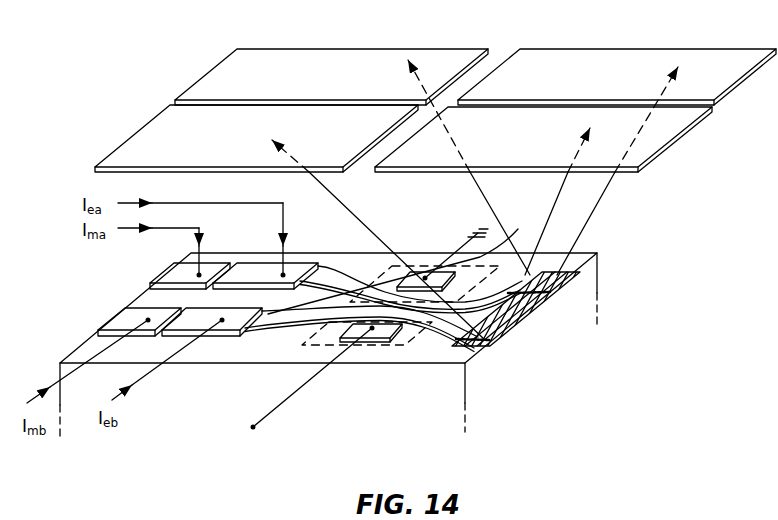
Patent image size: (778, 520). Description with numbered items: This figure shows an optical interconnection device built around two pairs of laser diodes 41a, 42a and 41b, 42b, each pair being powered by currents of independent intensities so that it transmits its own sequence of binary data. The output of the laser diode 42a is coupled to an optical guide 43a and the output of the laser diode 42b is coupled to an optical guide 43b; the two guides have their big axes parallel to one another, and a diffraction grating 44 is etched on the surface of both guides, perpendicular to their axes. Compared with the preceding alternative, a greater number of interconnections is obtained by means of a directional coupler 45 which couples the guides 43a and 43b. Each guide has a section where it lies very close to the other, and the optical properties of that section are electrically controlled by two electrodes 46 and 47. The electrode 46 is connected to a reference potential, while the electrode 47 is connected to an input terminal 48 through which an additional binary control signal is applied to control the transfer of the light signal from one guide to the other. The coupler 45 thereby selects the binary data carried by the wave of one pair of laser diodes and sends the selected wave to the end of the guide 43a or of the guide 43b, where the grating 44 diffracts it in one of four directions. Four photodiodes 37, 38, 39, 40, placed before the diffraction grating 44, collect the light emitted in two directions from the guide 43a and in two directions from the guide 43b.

The photodiode 37 is at (136, 134).
The photodiode 38 is at (291, 49).
The photodiode 39 is at (557, 50).
The photodiode 40 is at (653, 138).
The laser diode 41a is at (167, 270).
The laser diode 41b is at (118, 313).
The laser diode 42a is at (250, 268).
The laser diode 42b is at (214, 330).
The optical guide 43a is at (338, 272).
The optical guide 43b is at (277, 322).
The diffraction grating 44 is at (458, 348).
The directional coupler 45 is at (432, 258).
The electrode 46 is at (398, 262).
The electrode 47 is at (377, 342).
The input terminal 48 is at (253, 427).